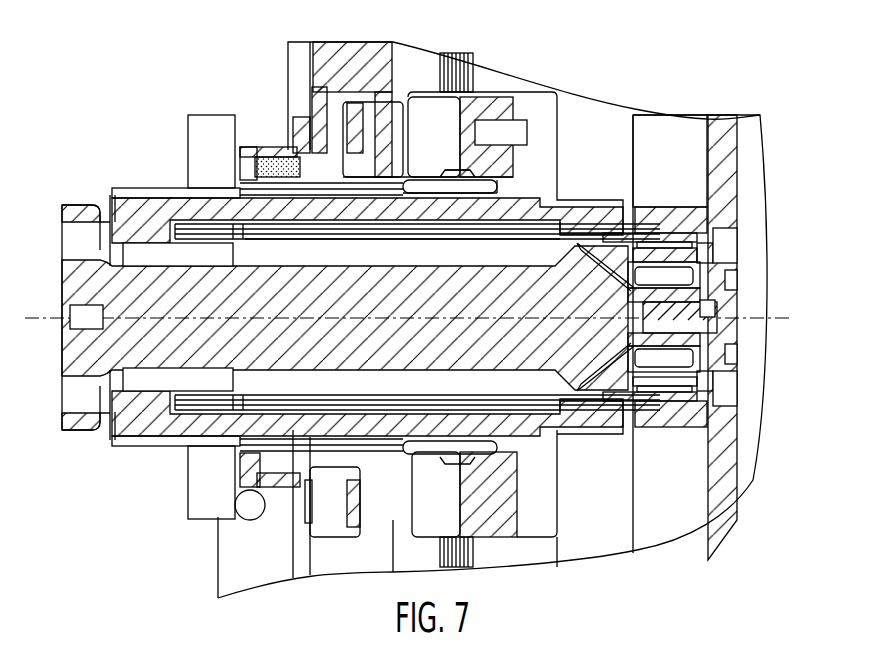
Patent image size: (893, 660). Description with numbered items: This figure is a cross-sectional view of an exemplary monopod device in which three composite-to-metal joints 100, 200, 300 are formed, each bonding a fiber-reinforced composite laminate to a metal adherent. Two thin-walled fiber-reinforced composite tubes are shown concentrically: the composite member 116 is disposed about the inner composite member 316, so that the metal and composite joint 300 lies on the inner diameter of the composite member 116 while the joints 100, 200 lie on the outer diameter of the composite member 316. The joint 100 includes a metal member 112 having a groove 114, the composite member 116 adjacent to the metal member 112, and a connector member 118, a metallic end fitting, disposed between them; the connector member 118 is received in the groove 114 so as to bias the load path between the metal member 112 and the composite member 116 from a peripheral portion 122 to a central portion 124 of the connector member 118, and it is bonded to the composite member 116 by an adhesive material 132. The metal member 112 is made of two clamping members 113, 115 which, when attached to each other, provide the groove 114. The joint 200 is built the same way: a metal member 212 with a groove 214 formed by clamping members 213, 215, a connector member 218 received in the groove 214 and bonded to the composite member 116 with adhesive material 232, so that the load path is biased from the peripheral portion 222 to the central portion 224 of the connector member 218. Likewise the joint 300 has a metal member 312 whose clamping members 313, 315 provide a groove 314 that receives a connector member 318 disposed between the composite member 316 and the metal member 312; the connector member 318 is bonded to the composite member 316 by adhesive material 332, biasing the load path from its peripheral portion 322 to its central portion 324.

The composite-to-metal joint 100 is at (233, 185).
The metal member 112 is at (264, 128).
The clamping member 113 is at (248, 150).
The groove 114 is at (265, 180).
The clamping member 115 is at (265, 152).
The composite member 116 is at (318, 196).
The connector member 118 is at (283, 178).
The peripheral portion 122 is at (215, 205).
The central portion 124 is at (262, 172).
The adhesive material 132 is at (297, 182).
The composite-to-metal joint 200 is at (500, 132).
The metal member 212 is at (463, 78).
The clamping member 213 is at (432, 118).
The groove 214 is at (445, 170).
The clamping member 215 is at (470, 104).
The connector member 218 is at (432, 184).
The peripheral portion 222 is at (487, 183).
The central portion 224 is at (447, 180).
The adhesive material 232 is at (413, 185).
The metal and composite joint 300 is at (688, 255).
The metal member 312 is at (630, 262).
The clamping member 313 is at (585, 248).
The groove 314 is at (640, 288).
The clamping member 315 is at (645, 268).
The composite member 316 is at (360, 237).
The connector member 318 is at (640, 232).
The peripheral portion 322 is at (612, 242).
The central portion 324 is at (662, 250).
The adhesive material 332 is at (624, 246).